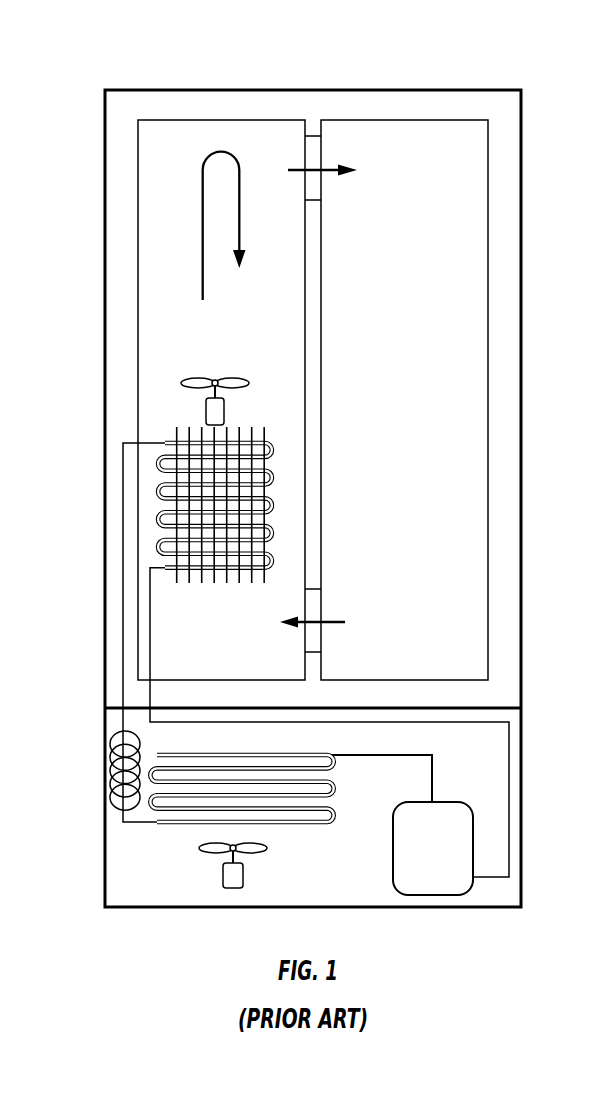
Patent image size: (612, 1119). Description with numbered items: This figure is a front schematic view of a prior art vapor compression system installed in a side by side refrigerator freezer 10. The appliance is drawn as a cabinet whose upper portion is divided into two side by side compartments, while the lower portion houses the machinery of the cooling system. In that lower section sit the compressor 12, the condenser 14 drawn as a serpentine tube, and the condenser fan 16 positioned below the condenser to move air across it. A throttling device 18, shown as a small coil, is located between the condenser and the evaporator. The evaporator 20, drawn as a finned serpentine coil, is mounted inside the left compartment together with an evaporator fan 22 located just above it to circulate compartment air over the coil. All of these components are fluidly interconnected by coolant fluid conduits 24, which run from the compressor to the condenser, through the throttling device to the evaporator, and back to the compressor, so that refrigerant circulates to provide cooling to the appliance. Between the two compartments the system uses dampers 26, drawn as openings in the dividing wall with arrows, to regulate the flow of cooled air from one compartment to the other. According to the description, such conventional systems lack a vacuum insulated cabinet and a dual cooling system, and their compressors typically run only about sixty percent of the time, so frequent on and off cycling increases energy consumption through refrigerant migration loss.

The refrigerator and/or freezer 10 is at (127, 65).
The compressor 12 is at (445, 858).
The condenser 14 is at (173, 827).
The condenser fan 16 is at (233, 884).
The throttling device 18 is at (110, 777).
The evaporator 20 is at (160, 490).
The evaporator fan 22 is at (213, 417).
The coolant fluid conduits 24 is at (138, 510).
The damper 26 is at (310, 150).